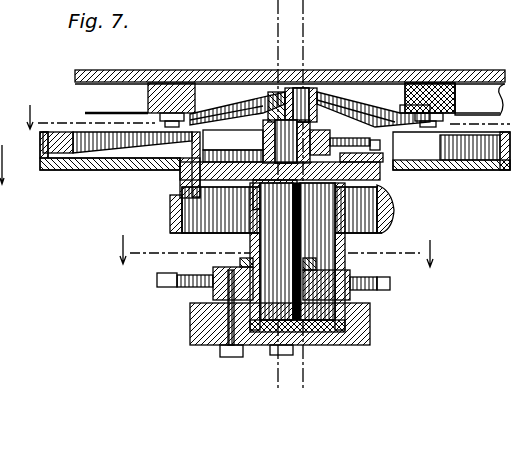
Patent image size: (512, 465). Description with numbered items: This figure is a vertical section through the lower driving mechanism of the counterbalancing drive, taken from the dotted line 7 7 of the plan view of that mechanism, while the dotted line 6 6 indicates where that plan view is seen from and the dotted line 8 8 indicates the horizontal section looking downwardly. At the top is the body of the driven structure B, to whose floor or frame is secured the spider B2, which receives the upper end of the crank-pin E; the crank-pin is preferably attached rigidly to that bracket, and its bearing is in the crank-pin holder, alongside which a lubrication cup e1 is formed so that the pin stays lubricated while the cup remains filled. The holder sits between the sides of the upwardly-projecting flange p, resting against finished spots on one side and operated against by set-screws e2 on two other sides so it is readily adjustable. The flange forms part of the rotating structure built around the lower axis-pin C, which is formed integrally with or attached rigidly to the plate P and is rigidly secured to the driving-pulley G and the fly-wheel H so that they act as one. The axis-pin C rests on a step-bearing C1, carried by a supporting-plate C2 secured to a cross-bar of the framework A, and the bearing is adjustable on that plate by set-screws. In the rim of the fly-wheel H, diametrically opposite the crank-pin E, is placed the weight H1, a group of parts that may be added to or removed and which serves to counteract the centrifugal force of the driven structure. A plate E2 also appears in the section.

The driven structure B is at (473, 70).
The spider B2 is at (245, 100).
The crank-pin E is at (308, 90).
The lubrication cup e1 is at (268, 97).
The set-screws e2 is at (364, 112).
The weight H1 is at (60, 127).
The fly-wheel H is at (90, 186).
The tapered plate E2 is at (263, 150).
The plate P is at (383, 181).
The upwardly-projecting flange p is at (375, 147).
The driving-pulley G is at (395, 222).
The lower axis-pin C is at (255, 244).
The step-bearing C1 is at (150, 268).
The supporting-plate C2 is at (413, 288).
The framework A is at (368, 372).
The section line 6 6 is at (261, 118).
The section line 7 7 is at (8, 164).
The section line 8 8 is at (274, 251).